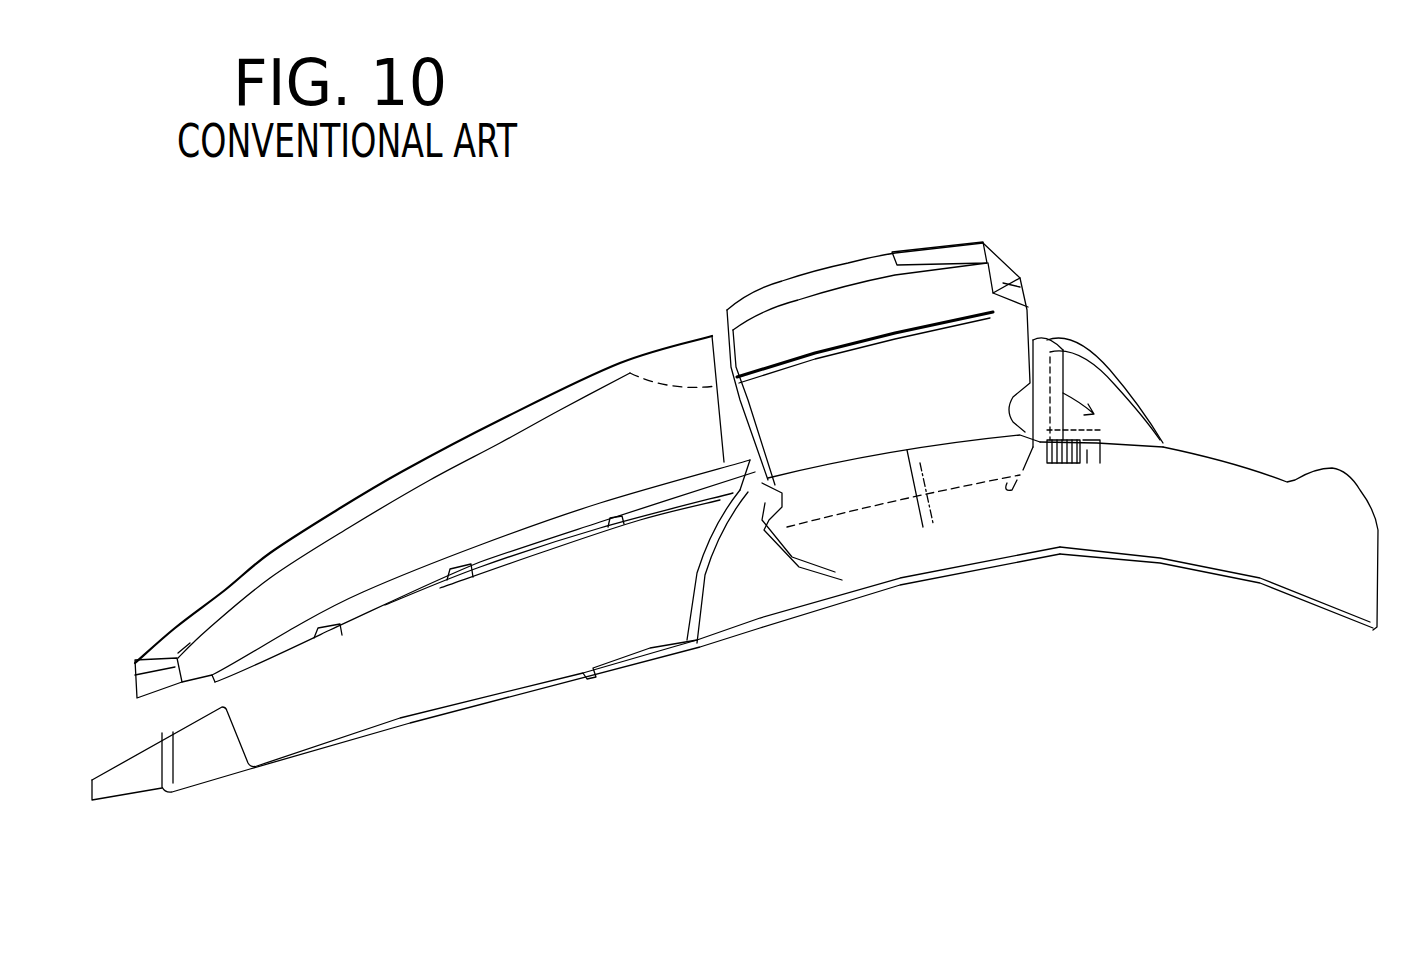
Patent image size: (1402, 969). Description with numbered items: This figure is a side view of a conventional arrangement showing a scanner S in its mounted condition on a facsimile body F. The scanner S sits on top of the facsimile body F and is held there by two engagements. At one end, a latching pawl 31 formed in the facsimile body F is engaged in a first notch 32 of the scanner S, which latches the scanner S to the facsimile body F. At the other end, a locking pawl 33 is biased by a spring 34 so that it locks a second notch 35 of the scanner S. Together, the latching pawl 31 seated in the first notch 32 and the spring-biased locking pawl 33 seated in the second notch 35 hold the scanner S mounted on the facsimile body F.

The scanner S is at (879, 389).
The facsimile body F is at (510, 663).
The latching pawl 31 is at (738, 535).
The first notch 32 is at (800, 503).
The locking pawl 33 is at (1053, 393).
The spring 34 is at (1080, 460).
The second notch 35 is at (980, 427).